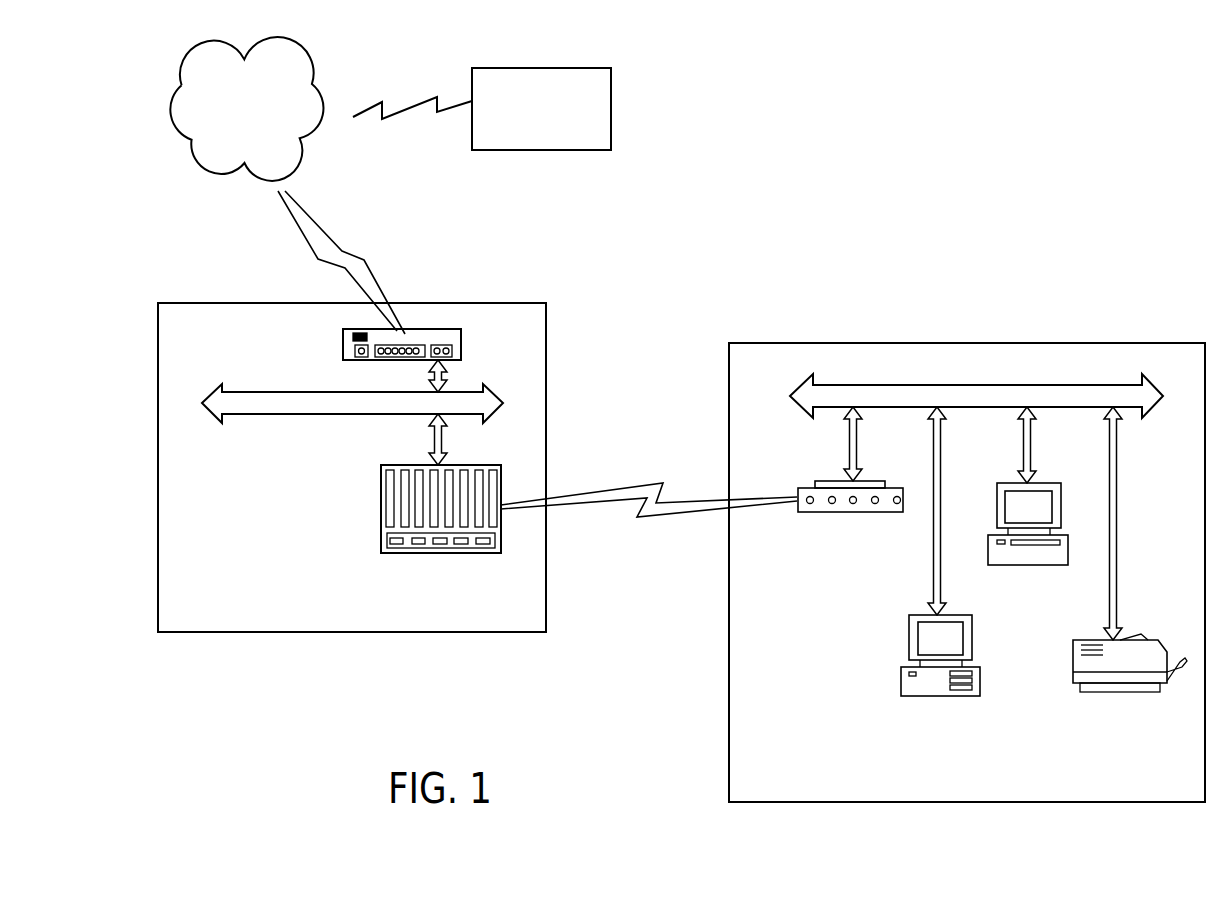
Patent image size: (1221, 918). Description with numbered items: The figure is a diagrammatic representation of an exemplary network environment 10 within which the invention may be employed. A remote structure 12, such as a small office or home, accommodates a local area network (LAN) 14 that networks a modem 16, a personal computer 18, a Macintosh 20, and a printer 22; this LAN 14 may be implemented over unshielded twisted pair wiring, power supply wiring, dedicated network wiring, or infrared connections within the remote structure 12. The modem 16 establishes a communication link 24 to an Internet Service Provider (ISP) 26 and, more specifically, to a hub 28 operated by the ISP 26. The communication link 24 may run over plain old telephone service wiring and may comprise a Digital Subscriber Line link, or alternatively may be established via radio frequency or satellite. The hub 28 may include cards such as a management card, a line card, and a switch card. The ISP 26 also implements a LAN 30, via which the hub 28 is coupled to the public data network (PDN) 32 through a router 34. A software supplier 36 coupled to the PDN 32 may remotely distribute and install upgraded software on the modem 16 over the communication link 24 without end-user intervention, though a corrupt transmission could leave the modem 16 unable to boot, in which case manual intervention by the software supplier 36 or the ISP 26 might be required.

The network environment 10 is at (849, 231).
The remote structure 12 is at (848, 803).
The local area network 14 is at (1050, 388).
The modem 16 is at (807, 518).
The personal computer 18 is at (910, 697).
The Macintosh 20 is at (1013, 566).
The printer 22 is at (1094, 684).
The communication link 24 is at (667, 518).
The Internet Service Provider 26 is at (350, 633).
The hub 28 is at (381, 508).
The LAN 30 is at (284, 415).
The public data network 32 is at (308, 50).
The router 34 is at (461, 340).
The software supplier 36 is at (612, 86).